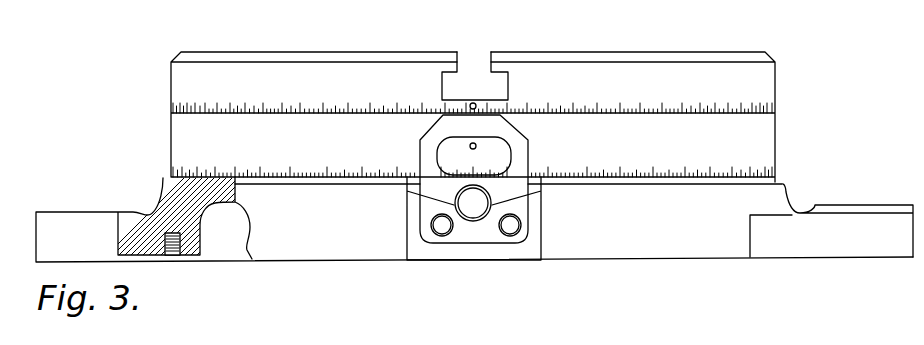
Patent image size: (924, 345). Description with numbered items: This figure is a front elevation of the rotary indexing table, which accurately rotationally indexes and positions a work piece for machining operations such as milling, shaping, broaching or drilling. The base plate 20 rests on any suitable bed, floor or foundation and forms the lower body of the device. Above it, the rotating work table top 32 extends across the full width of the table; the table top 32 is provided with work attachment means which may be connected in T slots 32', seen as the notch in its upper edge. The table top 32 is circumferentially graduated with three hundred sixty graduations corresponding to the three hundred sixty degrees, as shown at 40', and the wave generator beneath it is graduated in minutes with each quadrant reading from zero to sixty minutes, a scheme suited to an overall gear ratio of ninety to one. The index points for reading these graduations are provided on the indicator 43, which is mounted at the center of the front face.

The base plate 20 is at (62, 217).
The work table top 32 is at (473, 102).
The T slots 32' is at (475, 68).
The graduations 40' is at (477, 70).
The indicator 43 is at (477, 130).